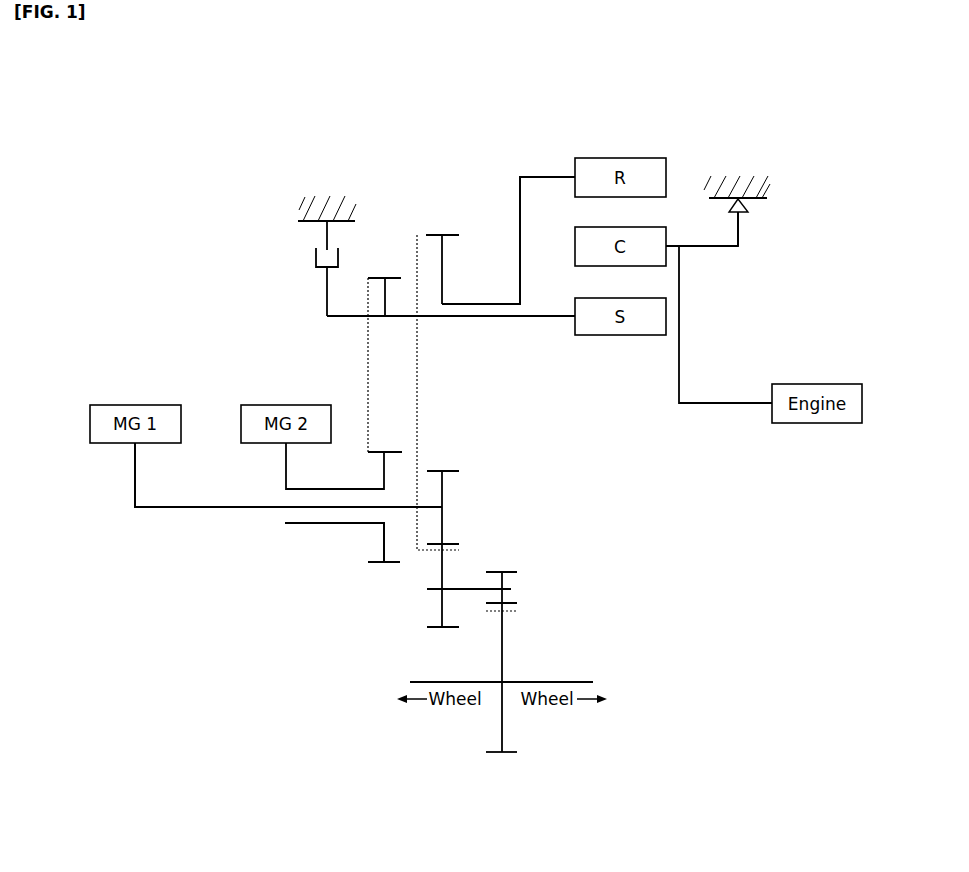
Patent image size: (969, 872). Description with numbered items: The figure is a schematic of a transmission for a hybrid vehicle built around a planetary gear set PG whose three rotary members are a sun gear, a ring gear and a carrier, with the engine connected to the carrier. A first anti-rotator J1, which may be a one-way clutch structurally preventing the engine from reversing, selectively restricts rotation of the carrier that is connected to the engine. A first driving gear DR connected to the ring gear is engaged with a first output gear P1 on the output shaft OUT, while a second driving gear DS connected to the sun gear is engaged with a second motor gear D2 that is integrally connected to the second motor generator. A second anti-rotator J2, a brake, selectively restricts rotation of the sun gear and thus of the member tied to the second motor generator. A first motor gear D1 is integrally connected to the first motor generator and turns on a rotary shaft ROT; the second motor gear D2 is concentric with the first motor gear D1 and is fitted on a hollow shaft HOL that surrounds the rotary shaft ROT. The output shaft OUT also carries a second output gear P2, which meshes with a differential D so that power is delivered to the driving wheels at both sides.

The planetary gear set PG is at (617, 146).
The first anti-rotator J1 is at (752, 207).
The second anti-rotator J2 is at (316, 258).
The first driving gear DR is at (442, 235).
The second driving gear DS is at (385, 278).
The first motor gear D1 is at (442, 471).
The second motor gear D2 is at (373, 562).
The first output gear P1 is at (432, 627).
The second output gear P2 is at (505, 572).
The rotary shaft ROT is at (228, 507).
The hollow shaft HOL is at (335, 523).
The output shaft OUT is at (548, 682).
The differential D is at (505, 752).